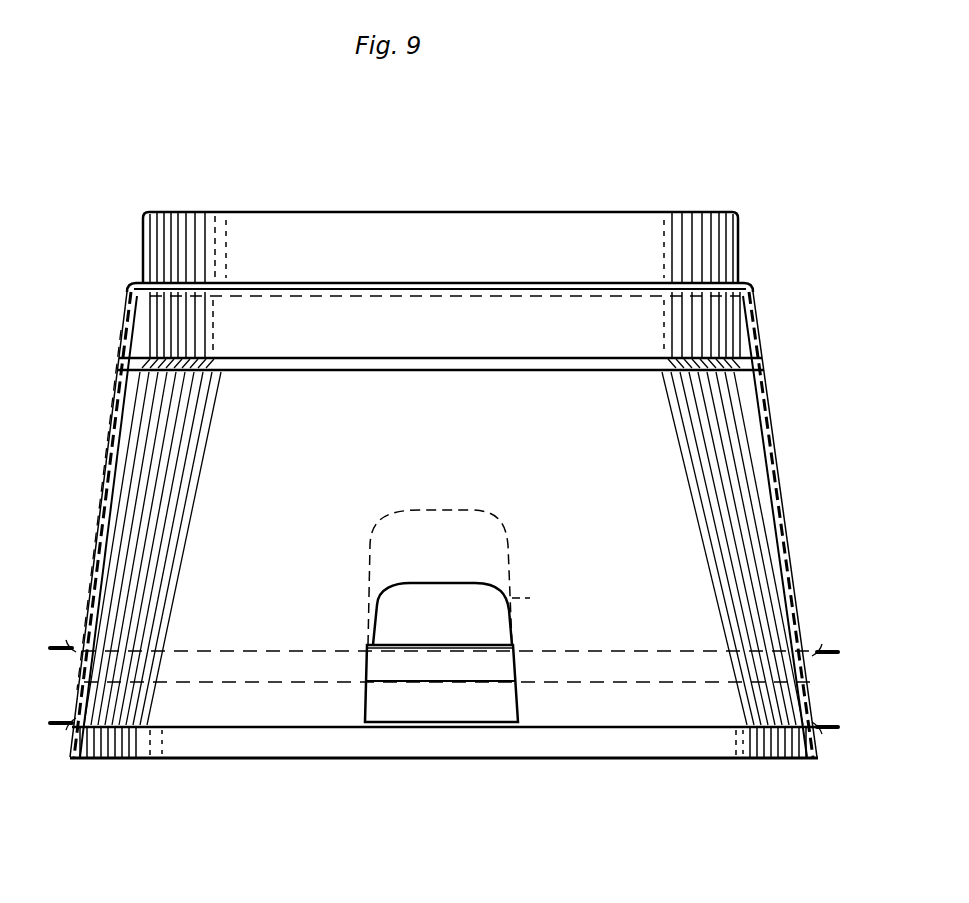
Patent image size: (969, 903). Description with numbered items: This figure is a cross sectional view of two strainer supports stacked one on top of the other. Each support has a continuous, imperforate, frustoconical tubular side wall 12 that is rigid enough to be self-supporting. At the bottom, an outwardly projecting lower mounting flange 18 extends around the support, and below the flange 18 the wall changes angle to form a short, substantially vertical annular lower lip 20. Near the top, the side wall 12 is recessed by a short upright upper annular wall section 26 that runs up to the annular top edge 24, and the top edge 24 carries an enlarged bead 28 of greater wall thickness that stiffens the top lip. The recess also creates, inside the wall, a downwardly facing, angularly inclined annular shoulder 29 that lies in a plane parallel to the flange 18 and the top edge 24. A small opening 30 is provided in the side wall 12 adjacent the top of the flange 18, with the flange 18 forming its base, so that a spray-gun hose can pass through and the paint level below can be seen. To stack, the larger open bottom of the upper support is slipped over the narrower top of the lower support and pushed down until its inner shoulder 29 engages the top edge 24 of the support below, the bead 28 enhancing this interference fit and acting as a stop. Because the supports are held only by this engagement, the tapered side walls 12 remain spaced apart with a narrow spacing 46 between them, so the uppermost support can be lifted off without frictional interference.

The tubular side wall 12 is at (788, 470).
The lower mounting flange 18 is at (828, 650).
The lower lip 20 is at (578, 682).
The annular top edge 24 is at (372, 212).
The upper annular wall section 26 is at (740, 252).
The enlarged bead 28 is at (738, 217).
The annular shoulder 29 is at (752, 295).
The opening 30 is at (516, 645).
The spacing 46 is at (108, 485).